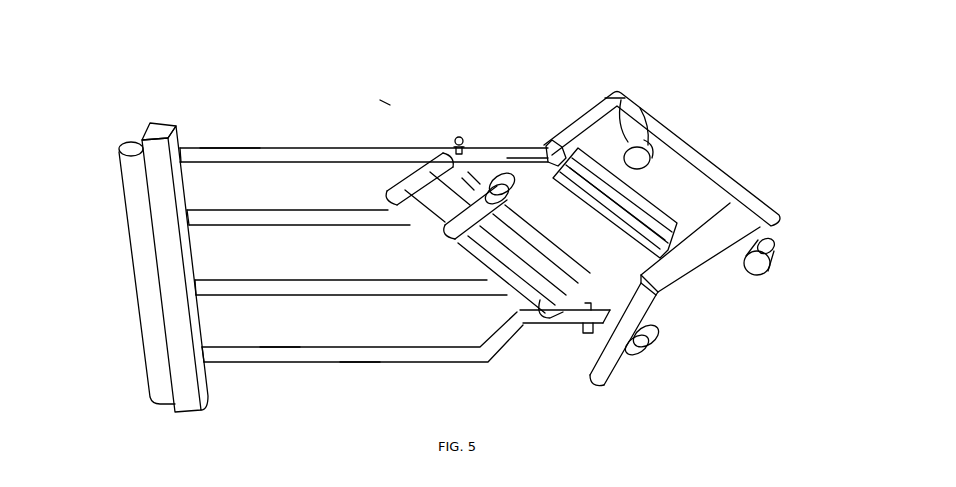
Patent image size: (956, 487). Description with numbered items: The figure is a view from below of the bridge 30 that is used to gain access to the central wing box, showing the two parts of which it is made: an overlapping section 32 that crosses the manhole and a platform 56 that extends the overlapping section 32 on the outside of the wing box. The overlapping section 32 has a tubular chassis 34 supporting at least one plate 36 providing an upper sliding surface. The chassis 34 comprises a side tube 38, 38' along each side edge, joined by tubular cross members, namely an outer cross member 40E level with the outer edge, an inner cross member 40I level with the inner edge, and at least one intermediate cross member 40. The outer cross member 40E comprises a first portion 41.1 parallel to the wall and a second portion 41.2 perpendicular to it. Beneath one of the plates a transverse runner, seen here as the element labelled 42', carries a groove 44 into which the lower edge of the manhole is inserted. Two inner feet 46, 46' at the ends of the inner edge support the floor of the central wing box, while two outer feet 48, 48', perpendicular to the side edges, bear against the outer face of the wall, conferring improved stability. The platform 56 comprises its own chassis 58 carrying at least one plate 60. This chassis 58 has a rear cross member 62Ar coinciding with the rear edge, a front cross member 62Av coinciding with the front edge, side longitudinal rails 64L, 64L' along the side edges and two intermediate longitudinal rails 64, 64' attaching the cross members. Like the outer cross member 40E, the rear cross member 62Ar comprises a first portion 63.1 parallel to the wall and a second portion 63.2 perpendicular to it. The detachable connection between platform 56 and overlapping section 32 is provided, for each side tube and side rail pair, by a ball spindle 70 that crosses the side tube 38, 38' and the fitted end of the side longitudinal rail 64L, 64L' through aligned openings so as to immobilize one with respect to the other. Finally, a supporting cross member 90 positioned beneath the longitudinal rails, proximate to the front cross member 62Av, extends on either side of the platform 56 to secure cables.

The bridge 30 is at (385, 102).
The overlapping section 32 is at (589, 109).
The chassis 34 is at (663, 279).
The plate 36 is at (631, 96).
The side tube 38 is at (675, 294).
The side tube 38' is at (526, 128).
The intermediate cross member 40 is at (549, 144).
The outer cross member 40E is at (542, 326).
The inner cross member 40I is at (716, 180).
The first portion 41.1 is at (530, 308).
The second portion 41.2 is at (440, 186).
The beam groove 42' is at (644, 185).
The groove 44 is at (668, 268).
The inner foot 46 is at (777, 254).
The inner foot 46' is at (656, 124).
The outer foot 48 is at (649, 355).
The outer foot 48' is at (481, 138).
The platform 56 is at (261, 149).
The chassis 58 is at (362, 364).
The plate 60 is at (307, 349).
The rear cross member 62Ar is at (394, 186).
The front cross member 62Av is at (118, 150).
The first portion 63.1 is at (482, 283).
The second portion 63.2 is at (413, 176).
The intermediate longitudinal rail 64 is at (298, 174).
The intermediate longitudinal rail 64' is at (351, 341).
The side longitudinal rail 64L is at (221, 126).
The side longitudinal rail 64L' is at (286, 383).
The ball spindle 70 is at (457, 136).
The supporting cross member 90 is at (185, 405).